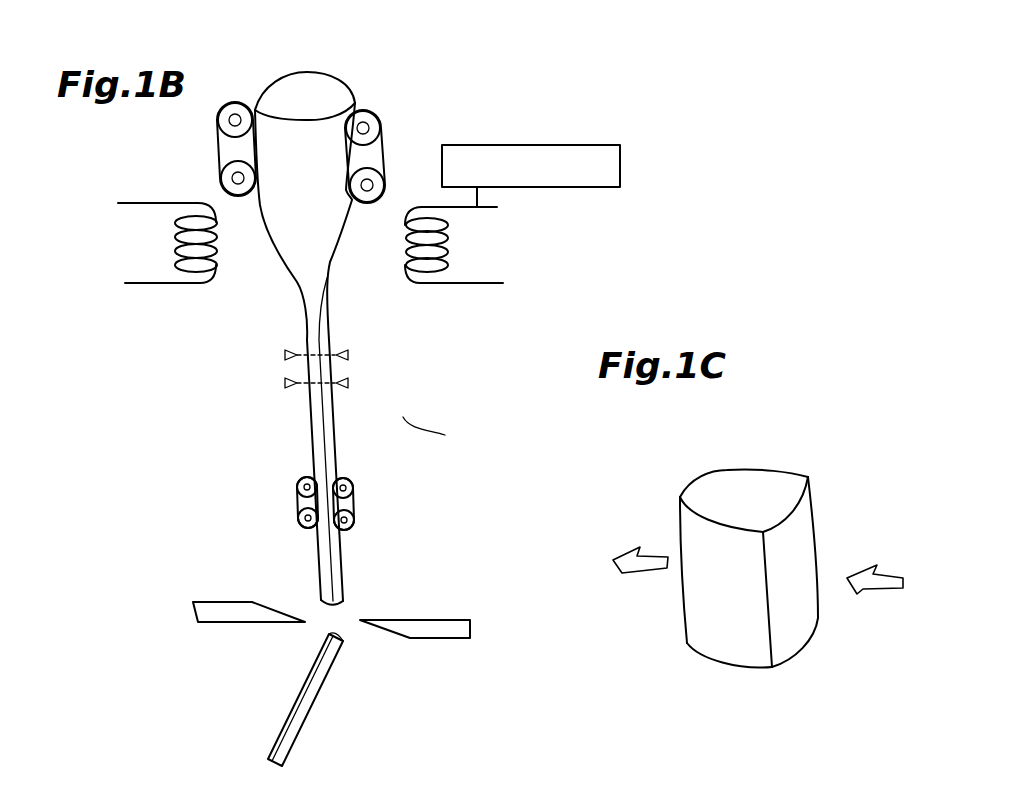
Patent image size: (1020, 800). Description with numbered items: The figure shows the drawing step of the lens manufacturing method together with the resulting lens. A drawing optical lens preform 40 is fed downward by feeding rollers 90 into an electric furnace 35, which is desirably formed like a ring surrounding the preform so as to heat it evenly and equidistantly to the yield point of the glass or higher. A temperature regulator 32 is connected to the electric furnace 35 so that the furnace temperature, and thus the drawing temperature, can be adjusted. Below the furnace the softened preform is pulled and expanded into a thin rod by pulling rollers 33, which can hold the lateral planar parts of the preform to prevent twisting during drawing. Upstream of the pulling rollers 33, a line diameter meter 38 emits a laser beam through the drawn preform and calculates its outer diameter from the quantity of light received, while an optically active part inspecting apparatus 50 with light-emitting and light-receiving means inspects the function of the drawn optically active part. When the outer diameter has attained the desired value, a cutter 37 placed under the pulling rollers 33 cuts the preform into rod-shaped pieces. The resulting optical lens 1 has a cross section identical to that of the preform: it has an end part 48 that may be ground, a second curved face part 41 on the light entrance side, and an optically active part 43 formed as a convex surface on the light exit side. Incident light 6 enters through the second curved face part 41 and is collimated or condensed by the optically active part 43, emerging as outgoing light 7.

In FIG. 1B, the drawing optical lens preform 40 is at (272, 78).
In FIG. 1B, the feeding rollers 90 is at (378, 117).
In FIG. 1B, the electric furnace 35 is at (487, 283).
In FIG. 1B, the temperature regulator 32 is at (593, 187).
In FIG. 1B, the line diameter meter 38 is at (348, 355).
In FIG. 1B, the optically active part inspecting apparatus 50 is at (348, 383).
In FIG. 1B, the pulling rollers 33 is at (355, 485).
In FIG. 1B, the cutter 37 is at (438, 620).
In FIG. 1C, the optical lens 1 is at (792, 469).
In FIG. 1C, the end part 48 is at (748, 487).
In FIG. 1C, the second curved face part 41 is at (804, 523).
In FIG. 1C, the optically active part 43 is at (686, 613).
In FIG. 1C, the outgoing light 7 is at (630, 551).
In FIG. 1C, the incident light 6 is at (880, 572).